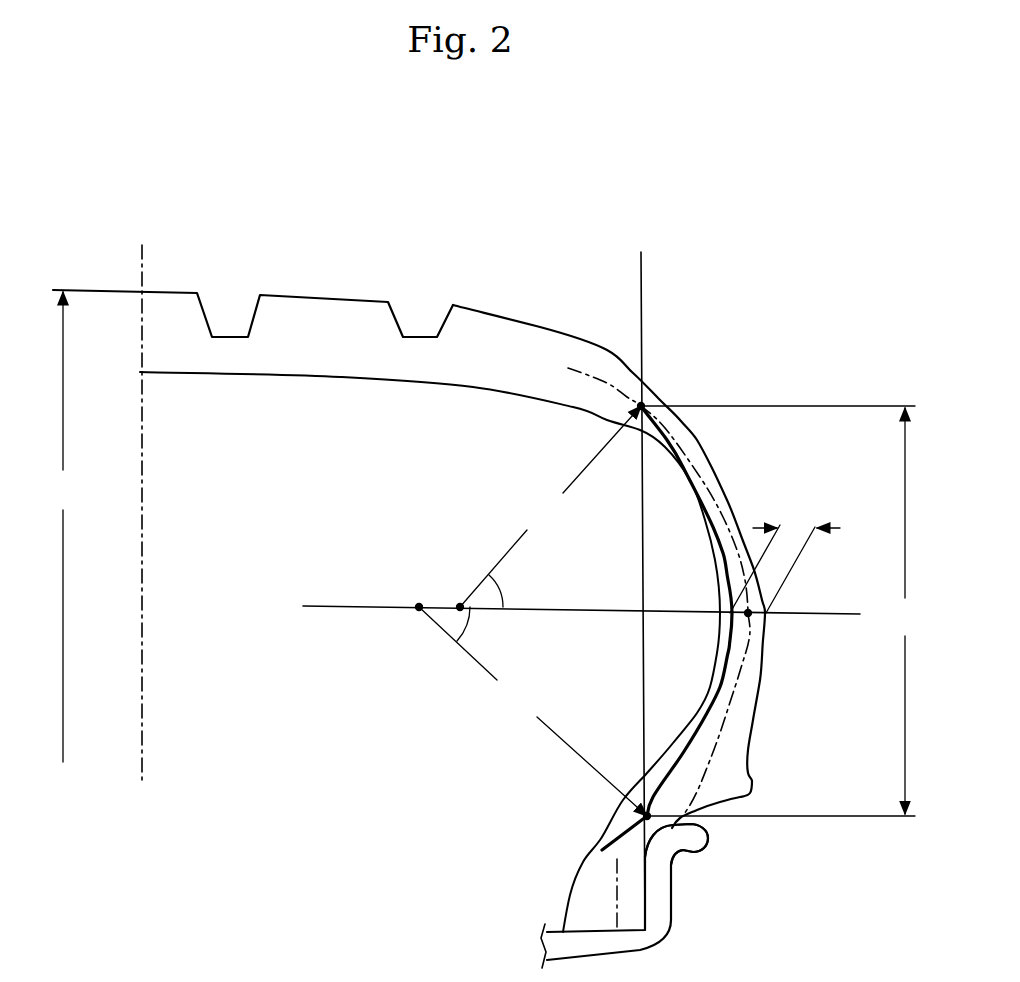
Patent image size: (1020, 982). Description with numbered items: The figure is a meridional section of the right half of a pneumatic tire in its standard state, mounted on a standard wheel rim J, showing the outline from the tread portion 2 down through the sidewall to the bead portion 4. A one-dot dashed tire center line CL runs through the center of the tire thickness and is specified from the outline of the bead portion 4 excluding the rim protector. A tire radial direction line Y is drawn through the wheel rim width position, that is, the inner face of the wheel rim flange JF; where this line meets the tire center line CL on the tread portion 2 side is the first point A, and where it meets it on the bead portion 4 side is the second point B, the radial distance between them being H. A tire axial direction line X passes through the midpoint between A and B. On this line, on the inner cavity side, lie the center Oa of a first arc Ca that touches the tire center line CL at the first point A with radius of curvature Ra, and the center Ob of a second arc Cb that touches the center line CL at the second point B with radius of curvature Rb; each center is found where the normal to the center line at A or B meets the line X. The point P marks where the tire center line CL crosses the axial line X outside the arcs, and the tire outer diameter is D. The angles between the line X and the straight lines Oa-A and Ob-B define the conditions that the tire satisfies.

The tread portion 2 is at (355, 268).
The bead portion 4 is at (562, 835).
The tire center line CL is at (618, 859).
The first arc Ca is at (594, 366).
The second arc Cb is at (680, 770).
The standard wheel rim J is at (673, 903).
The wheel rim flange JF is at (672, 870).
The tire equator C is at (137, 496).
The tire radial direction line Y is at (642, 263).
The outer diameter of the tire D is at (62, 527).
The tire axial direction line X is at (827, 612).
The distance in the tire radial direction from the first point A to the second point H is at (778, 611).
The offset distance h is at (785, 555).
The first point A is at (641, 406).
The second point B is at (675, 818).
The intersection point P is at (748, 613).
The center of the first arc Oa is at (451, 587).
The center of the second arc Ob is at (401, 626).
The radius of curvature of the first arc Ra is at (550, 506).
The radius of curvature of the second arc Rb is at (533, 711).